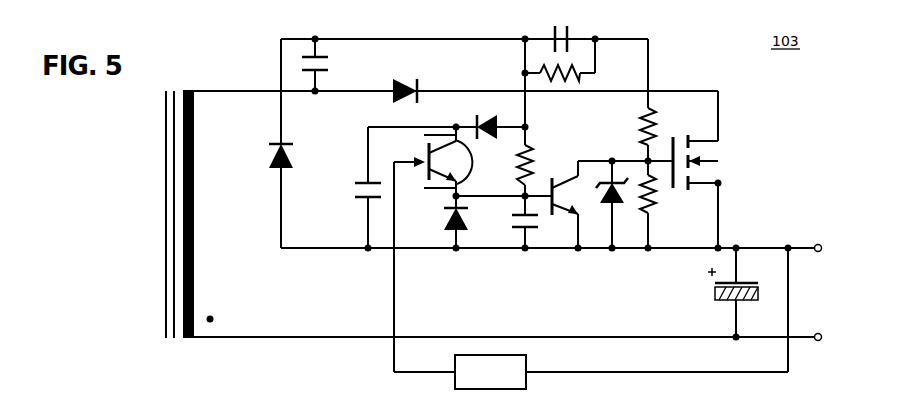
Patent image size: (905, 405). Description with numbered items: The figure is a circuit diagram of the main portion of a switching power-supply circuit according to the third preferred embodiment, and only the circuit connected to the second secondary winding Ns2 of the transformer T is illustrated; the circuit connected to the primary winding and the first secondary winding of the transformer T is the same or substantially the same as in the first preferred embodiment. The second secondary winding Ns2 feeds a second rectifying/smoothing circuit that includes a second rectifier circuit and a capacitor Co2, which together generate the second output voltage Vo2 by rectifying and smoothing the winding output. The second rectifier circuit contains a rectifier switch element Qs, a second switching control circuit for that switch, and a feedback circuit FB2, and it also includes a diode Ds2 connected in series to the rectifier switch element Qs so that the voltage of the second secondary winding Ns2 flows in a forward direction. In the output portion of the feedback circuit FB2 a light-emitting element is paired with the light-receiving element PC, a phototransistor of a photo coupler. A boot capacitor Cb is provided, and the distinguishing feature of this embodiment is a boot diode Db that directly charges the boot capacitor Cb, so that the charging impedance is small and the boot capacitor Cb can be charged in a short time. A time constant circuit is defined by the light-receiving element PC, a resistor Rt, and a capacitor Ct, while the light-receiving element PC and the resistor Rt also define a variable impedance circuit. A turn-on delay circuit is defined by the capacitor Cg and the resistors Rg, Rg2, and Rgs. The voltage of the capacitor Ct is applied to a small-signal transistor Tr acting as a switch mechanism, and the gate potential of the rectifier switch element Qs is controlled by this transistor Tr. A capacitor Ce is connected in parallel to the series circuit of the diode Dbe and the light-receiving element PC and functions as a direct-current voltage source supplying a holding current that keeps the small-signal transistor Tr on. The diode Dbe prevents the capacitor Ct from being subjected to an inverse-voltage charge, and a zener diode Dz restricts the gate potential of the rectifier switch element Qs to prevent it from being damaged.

The transformer T is at (172, 82).
The second secondary winding Ns2 is at (205, 160).
The boot capacitor Cb is at (328, 65).
The diode Ds2 is at (402, 78).
The boot diode Db is at (264, 156).
The capacitor Ce is at (352, 189).
The diode Dp is at (487, 112).
The capacitor Cg is at (559, 28).
The resistor Rg2 is at (584, 74).
The resistor Rg is at (632, 126).
The resistor Rt is at (512, 165).
The resistor Rgs is at (664, 197).
The capacitor Ct is at (511, 221).
The diode Dbe is at (435, 219).
The light-receiving element PC is at (431, 161).
The small-signal transistor Tr is at (561, 220).
The zener diode Dz is at (623, 212).
The rectifier switch element Qs is at (695, 146).
The capacitor Co2 is at (715, 292).
The second output voltage Vo2 is at (838, 290).
The feedback circuit FB2 is at (490, 372).